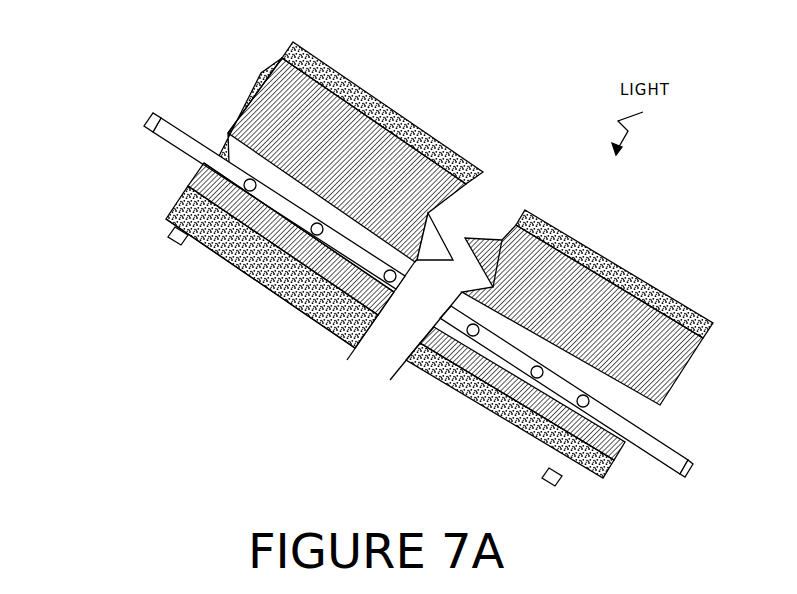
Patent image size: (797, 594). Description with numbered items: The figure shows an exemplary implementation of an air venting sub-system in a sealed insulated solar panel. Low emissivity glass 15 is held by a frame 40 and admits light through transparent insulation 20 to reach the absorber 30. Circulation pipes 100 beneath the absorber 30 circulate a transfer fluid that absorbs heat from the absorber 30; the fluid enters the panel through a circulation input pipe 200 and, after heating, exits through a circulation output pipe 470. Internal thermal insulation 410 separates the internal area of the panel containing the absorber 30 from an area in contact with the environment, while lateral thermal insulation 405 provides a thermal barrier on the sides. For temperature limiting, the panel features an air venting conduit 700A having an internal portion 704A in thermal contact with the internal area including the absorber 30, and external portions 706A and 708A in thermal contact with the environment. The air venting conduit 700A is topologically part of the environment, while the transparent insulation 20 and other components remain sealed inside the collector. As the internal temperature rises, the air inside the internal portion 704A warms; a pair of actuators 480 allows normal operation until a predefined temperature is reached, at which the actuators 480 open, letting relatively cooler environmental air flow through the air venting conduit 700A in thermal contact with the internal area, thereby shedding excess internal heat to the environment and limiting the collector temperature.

The low emissivity glass 15 is at (265, 70).
The frame 40 is at (257, 80).
The transparent insulation 20 is at (318, 140).
The lateral thermal insulation 405 is at (150, 124).
The circulation output pipe 470 is at (173, 143).
The absorber 30 is at (243, 200).
The internal thermal insulation 410 is at (300, 253).
The actuators 480 is at (345, 380).
The internal portion 704A is at (264, 277).
The external portion 706A is at (177, 247).
The air venting conduit 700A is at (462, 408).
The external portion 708A is at (545, 480).
The circulation input pipe 200 is at (660, 465).
The circulation pipes 100 is at (450, 228).